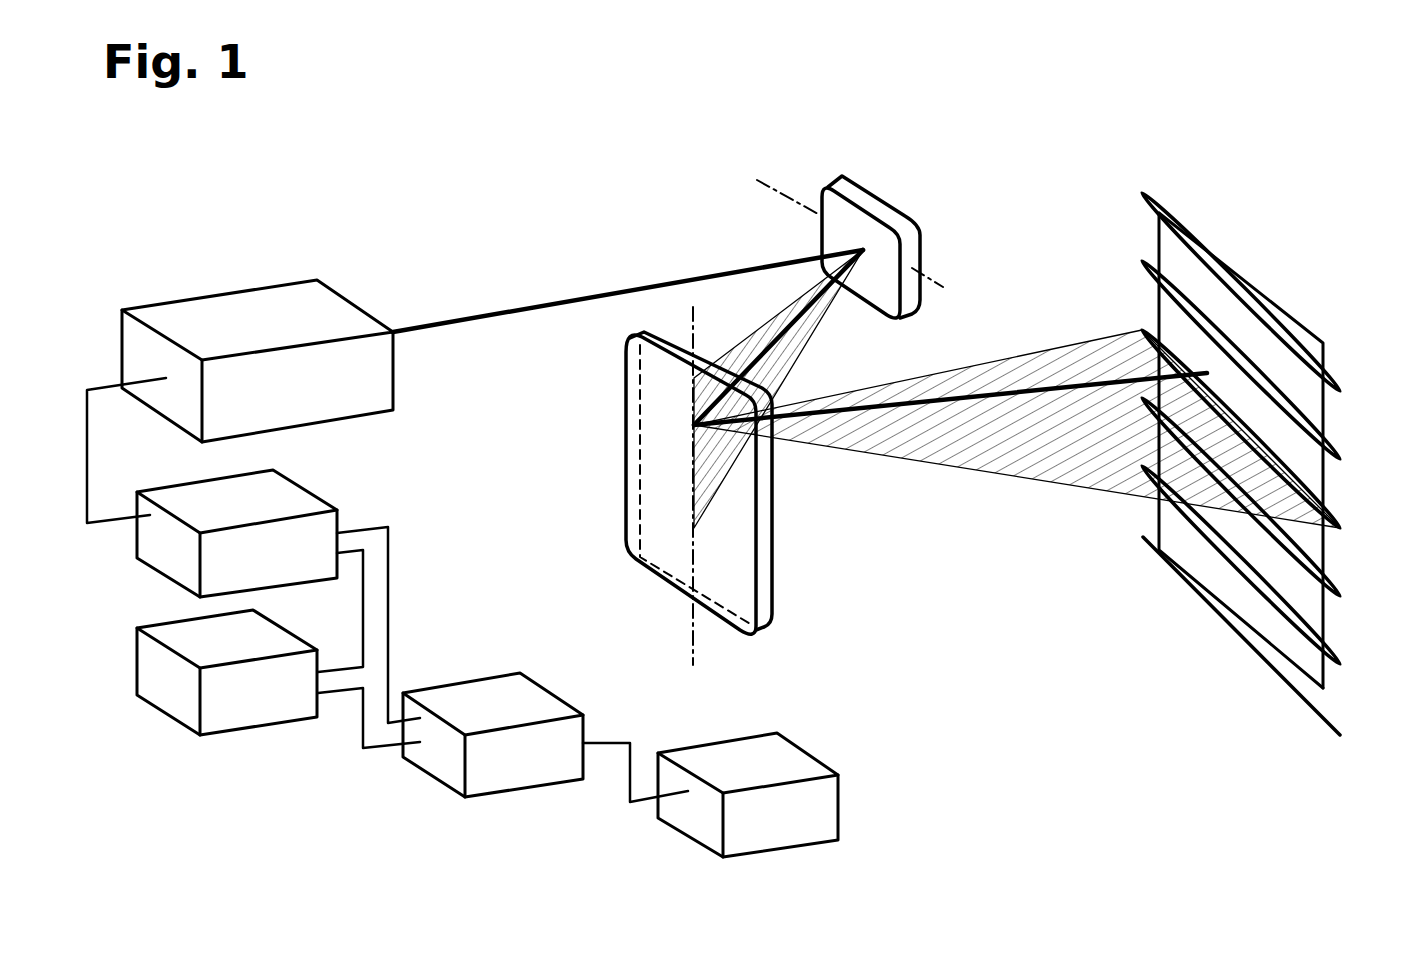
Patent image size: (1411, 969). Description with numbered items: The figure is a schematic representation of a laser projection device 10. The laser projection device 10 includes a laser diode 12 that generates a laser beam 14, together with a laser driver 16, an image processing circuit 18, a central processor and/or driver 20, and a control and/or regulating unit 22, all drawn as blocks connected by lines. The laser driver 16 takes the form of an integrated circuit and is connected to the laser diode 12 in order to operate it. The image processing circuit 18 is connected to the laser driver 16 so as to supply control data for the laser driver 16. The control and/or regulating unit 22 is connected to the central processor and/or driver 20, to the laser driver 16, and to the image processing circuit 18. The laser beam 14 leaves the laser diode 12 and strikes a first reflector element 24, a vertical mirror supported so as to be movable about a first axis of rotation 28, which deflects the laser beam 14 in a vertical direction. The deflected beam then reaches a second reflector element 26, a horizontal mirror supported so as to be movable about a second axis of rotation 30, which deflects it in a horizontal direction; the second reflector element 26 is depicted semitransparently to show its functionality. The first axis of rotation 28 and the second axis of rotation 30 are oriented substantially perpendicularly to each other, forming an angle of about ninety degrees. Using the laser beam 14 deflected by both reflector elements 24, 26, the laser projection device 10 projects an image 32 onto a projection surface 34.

The laser projection device 10 is at (357, 190).
The laser diode 12 is at (252, 310).
The laser beam 14 is at (535, 307).
The laser driver 16 is at (150, 546).
The image processing circuit 18 is at (150, 668).
The central processor and/or driver 20 is at (820, 817).
The control and/or regulating unit 22 is at (491, 694).
The first reflector element 24 is at (848, 180).
The second reflector element 26 is at (750, 552).
The first axis of rotation 28 is at (943, 287).
The second axis of rotation 30 is at (690, 657).
The image 32 is at (1252, 330).
The projection surface 34 is at (1308, 405).